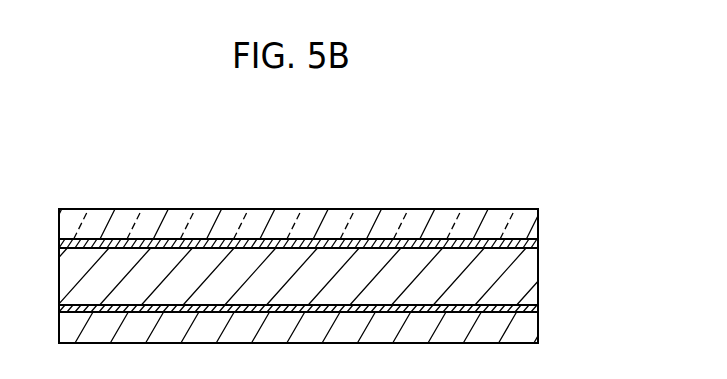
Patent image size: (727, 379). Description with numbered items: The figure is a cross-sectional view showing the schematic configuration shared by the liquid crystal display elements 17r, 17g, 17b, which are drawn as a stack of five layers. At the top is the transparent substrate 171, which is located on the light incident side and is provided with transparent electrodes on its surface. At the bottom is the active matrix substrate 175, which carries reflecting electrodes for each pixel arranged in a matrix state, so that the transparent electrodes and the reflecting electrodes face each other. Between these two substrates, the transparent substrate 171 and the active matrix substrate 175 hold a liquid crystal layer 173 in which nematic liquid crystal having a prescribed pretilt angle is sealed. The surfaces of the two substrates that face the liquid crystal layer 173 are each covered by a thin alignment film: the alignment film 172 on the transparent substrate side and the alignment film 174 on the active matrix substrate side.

The transparent substrate 171 is at (540, 218).
The alignment film 172 is at (540, 247).
The liquid crystal layer 173 is at (540, 280).
The alignment film 174 is at (540, 312).
The active matrix substrate 175 is at (540, 343).
The liquid crystal display element 17r is at (411, 208).
The liquid crystal display element 17g is at (348, 224).
The liquid crystal display element 17b is at (481, 224).